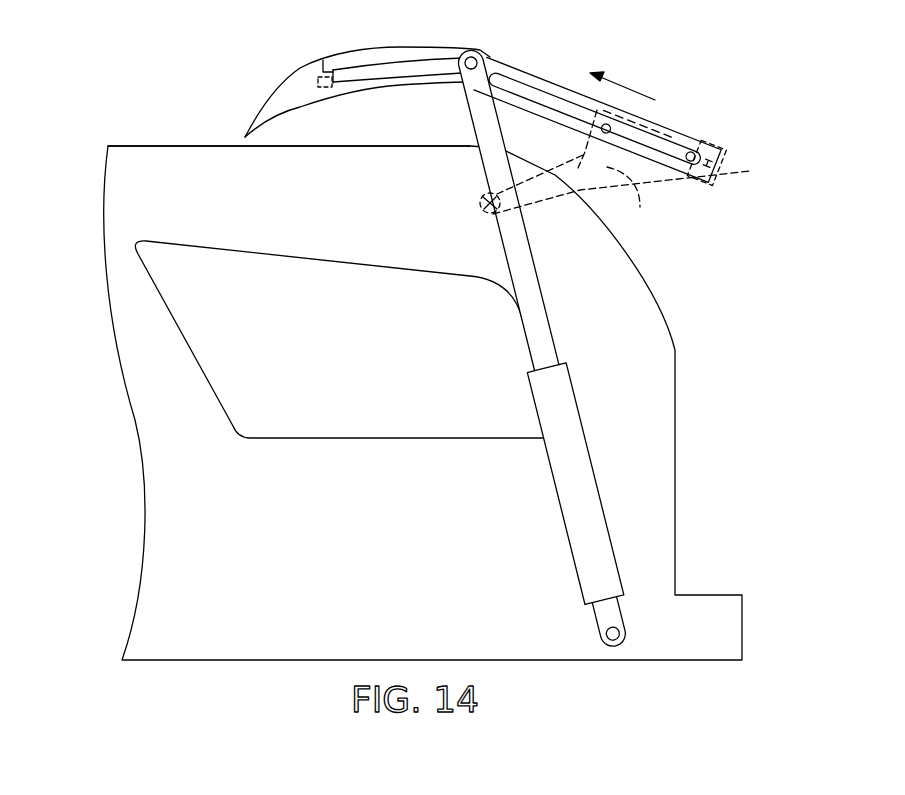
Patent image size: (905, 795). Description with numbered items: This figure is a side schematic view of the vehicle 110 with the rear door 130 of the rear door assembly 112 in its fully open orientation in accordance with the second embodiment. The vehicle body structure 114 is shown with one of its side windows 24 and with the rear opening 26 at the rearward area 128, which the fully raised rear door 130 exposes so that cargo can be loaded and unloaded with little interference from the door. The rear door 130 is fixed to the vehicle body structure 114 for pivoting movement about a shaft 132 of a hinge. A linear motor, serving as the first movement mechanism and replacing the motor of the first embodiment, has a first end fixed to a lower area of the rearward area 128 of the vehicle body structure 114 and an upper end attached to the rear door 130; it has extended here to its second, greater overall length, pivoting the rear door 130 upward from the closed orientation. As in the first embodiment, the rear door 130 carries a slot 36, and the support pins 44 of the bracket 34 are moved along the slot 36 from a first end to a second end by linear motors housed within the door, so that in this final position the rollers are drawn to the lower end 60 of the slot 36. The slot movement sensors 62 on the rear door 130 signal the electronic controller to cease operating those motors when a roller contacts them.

The vehicle 110 is at (178, 69).
The vehicle body structure 114 is at (173, 143).
The rear door 130 is at (402, 44).
The slot movement sensor 62 is at (320, 60).
The slot 36 is at (549, 96).
The rear door assembly 112 is at (676, 133).
The rearward area 128 is at (460, 157).
The support pin 44 is at (589, 150).
The shaft 132 is at (491, 243).
The lower end of the slot 60 is at (655, 153).
The bracket 34 is at (621, 197).
The rear opening 26 is at (676, 443).
The side window 24 is at (363, 393).